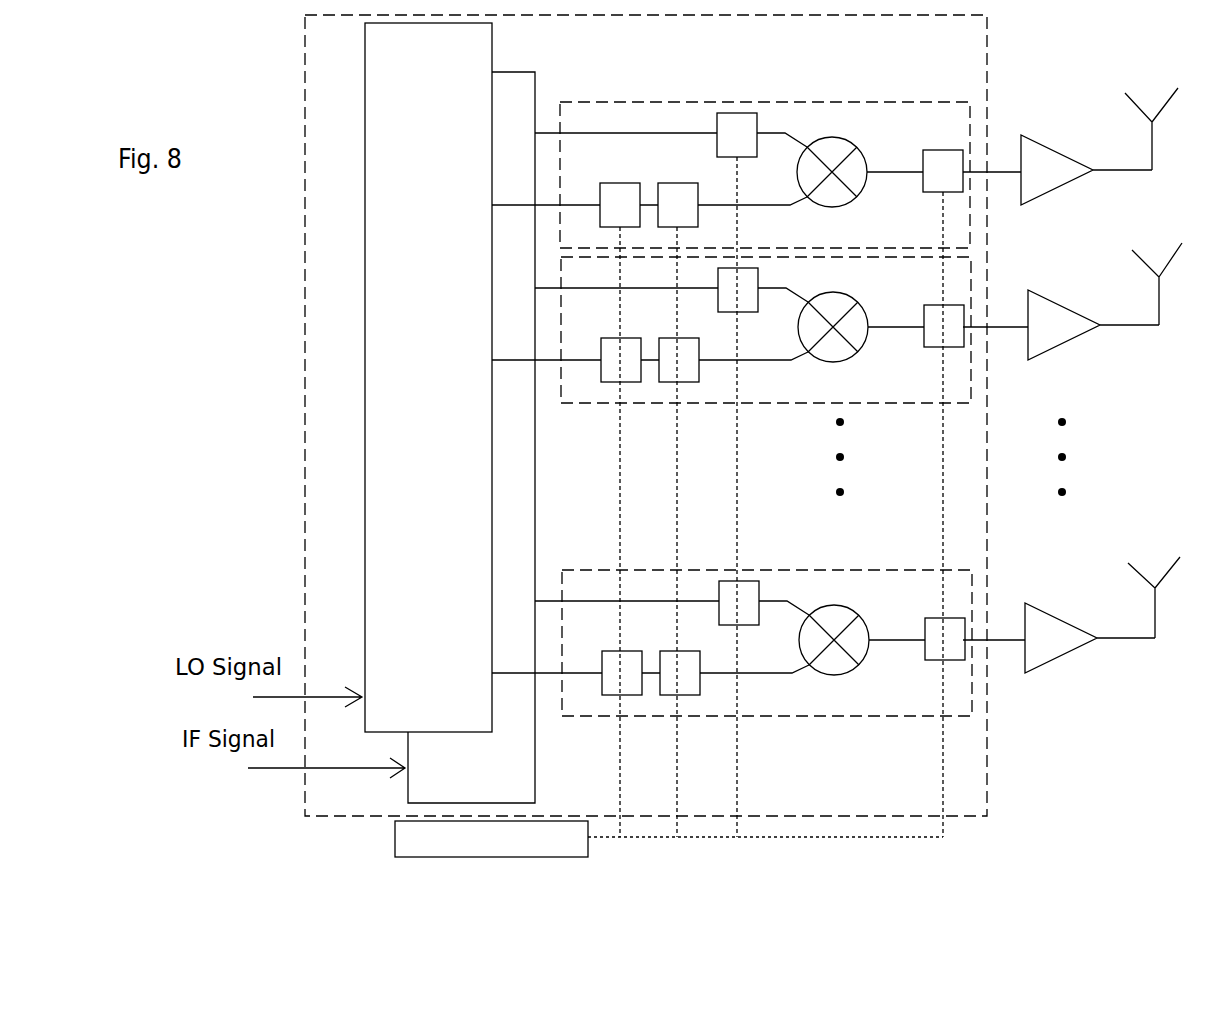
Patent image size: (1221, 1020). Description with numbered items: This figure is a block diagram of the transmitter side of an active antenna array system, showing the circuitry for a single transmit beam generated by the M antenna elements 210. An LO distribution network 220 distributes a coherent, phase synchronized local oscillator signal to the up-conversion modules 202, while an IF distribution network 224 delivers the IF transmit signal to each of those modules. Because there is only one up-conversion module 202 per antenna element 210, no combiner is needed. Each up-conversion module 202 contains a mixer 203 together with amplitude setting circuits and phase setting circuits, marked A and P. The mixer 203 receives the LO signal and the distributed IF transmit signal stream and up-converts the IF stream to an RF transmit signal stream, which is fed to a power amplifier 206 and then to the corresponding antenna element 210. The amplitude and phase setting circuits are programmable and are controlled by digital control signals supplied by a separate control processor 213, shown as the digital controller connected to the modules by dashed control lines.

The LO distribution network 220 is at (427, 70).
The IF distribution network 224 is at (537, 82).
The up-conversion module 202 is at (927, 139).
The mixer 203 is at (829, 137).
The power amplifier 206 is at (1040, 197).
The antenna element 210 is at (1150, 133).
The control processor 213 is at (395, 839).